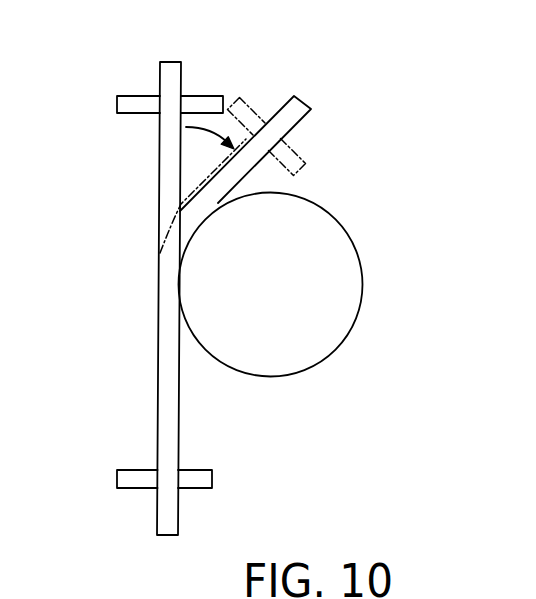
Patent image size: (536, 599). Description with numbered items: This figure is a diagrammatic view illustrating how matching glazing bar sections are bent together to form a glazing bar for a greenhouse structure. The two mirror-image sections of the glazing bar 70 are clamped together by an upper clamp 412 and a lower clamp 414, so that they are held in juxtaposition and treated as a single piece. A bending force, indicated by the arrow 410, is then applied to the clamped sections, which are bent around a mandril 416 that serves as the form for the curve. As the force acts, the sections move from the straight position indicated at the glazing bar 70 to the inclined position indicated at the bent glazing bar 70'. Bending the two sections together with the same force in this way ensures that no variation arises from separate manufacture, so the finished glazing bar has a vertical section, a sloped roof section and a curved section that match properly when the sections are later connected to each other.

The glazing bar 70 is at (181, 280).
The glazing bar in bent position 70' is at (267, 166).
The arrow 410 is at (199, 137).
The clamp 412 is at (120, 100).
The clamp 414 is at (134, 446).
The mandril 416 is at (352, 287).